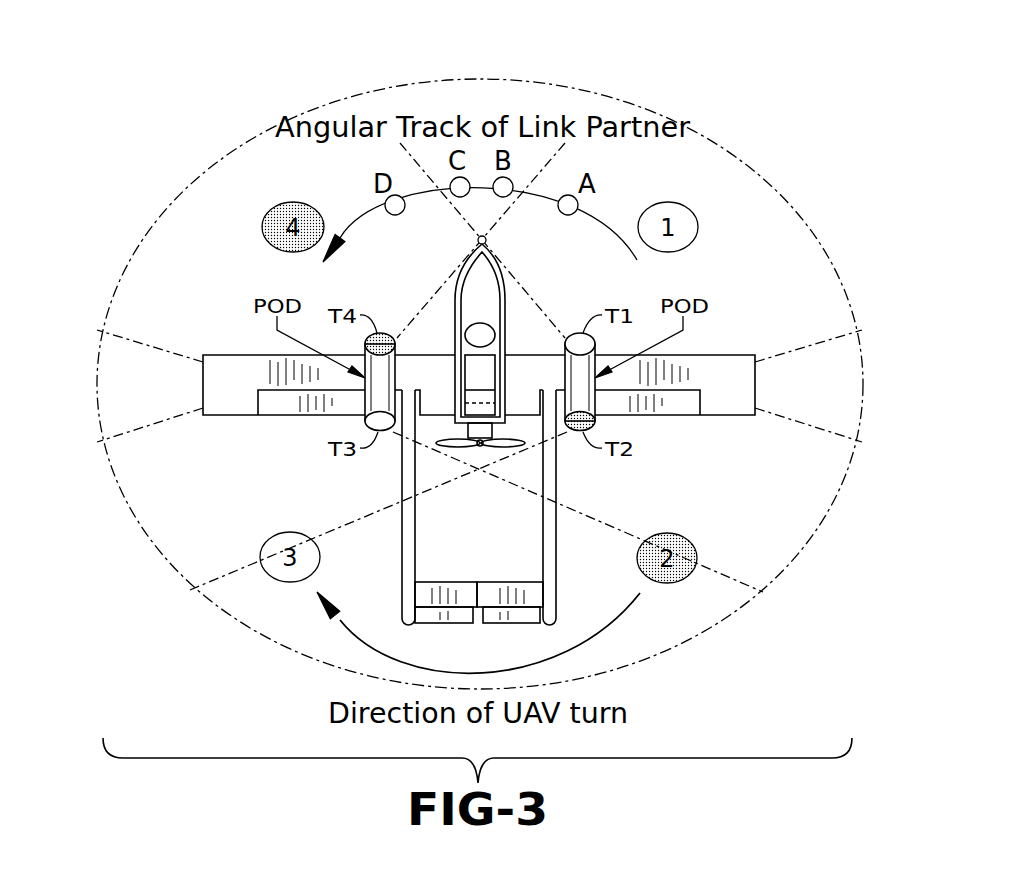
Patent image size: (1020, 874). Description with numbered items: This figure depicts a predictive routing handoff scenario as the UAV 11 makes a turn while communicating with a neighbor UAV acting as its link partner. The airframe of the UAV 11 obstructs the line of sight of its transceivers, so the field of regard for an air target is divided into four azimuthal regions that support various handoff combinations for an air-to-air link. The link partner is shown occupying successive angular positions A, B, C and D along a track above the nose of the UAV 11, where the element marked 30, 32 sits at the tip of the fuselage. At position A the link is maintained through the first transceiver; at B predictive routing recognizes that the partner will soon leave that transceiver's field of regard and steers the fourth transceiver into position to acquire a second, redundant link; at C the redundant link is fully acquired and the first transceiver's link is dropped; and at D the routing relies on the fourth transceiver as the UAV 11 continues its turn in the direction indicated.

The UAV 11 is at (468, 292).
The antenna 30 is at (432, 243).
The link partner antenna 32 is at (478, 240).